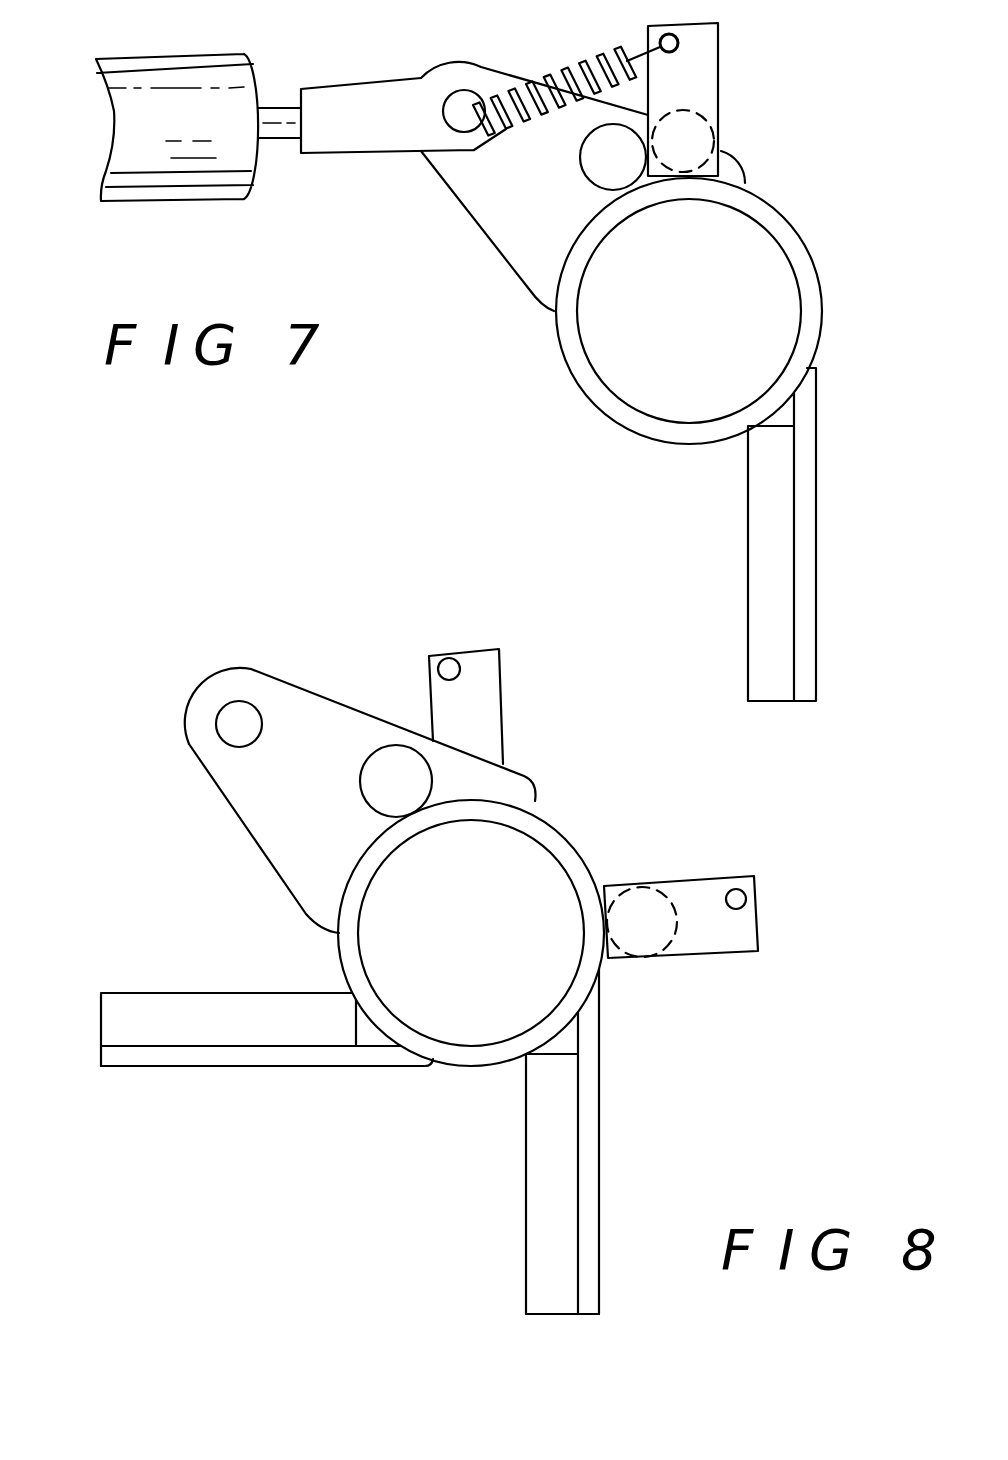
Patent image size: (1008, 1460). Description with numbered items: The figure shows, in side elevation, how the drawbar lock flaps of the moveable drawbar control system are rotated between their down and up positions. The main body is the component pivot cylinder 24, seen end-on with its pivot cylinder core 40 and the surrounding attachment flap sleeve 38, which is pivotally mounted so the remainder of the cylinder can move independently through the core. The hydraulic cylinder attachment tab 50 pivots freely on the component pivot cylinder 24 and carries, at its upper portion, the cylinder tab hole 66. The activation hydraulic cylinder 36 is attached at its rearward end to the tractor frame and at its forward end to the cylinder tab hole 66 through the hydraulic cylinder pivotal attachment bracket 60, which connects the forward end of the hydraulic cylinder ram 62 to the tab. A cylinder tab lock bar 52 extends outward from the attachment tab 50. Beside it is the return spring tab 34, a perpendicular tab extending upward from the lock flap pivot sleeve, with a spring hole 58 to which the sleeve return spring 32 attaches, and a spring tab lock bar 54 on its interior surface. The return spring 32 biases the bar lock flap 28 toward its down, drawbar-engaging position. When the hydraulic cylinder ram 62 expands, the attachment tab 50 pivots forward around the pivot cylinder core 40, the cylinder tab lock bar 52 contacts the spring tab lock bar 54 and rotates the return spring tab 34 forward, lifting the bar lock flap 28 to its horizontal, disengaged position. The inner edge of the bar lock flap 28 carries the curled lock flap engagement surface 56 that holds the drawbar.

In FIG. 7, the component pivot cylinder 24 is at (547, 337).
In FIG. 8, the component pivot cylinder 24 is at (455, 1069).
In FIG. 7, the bar lock flaps 28 is at (792, 532).
In FIG. 8, the bar lock flaps 28 is at (187, 1070).
In FIG. 7, the sleeve return springs 32 is at (538, 68).
In FIG. 7, the return spring tabs 34 is at (717, 73).
In FIG. 8, the return spring tabs 34 is at (473, 655).
In FIG. 7, the activation hydraulic cylinder 36 is at (233, 193).
In FIG. 7, the attachment flap sleeves 38 is at (563, 355).
In FIG. 8, the attachment flap sleeves 38 is at (378, 1020).
In FIG. 7, the pivot cylinder core 40 is at (628, 368).
In FIG. 8, the pivot cylinder core 40 is at (432, 985).
In FIG. 7, the hydraulic cylinder attachment tab 50 is at (473, 188).
In FIG. 8, the hydraulic cylinder attachment tab 50 is at (238, 762).
In FIG. 7, the cylinder tab lock bars 52 is at (597, 190).
In FIG. 8, the cylinder tab lock bars 52 is at (383, 755).
In FIG. 7, the spring tab lock bars 54 is at (695, 138).
In FIG. 8, the spring tab lock bars 54 is at (658, 932).
In FIG. 7, the lock flap engagement surfaces 56 is at (757, 498).
In FIG. 8, the lock flap engagement surfaces 56 is at (163, 1023).
In FIG. 7, the spring hole 58 is at (683, 40).
In FIG. 8, the spring hole 58 is at (442, 662).
In FIG. 7, the hydraulic cylinder pivotal attachment bracket 60 is at (368, 90).
In FIG. 7, the hydraulic cylinder ram 62 is at (277, 103).
In FIG. 8, the cylinder tab hole 66 is at (213, 723).